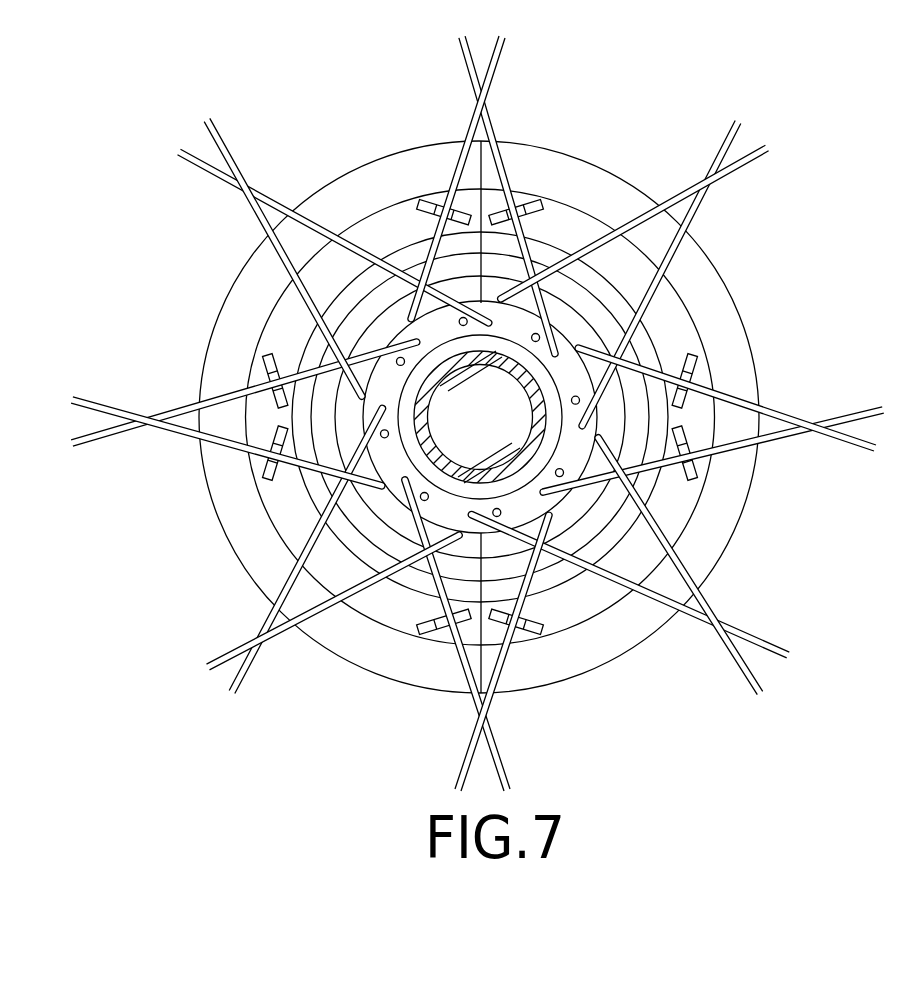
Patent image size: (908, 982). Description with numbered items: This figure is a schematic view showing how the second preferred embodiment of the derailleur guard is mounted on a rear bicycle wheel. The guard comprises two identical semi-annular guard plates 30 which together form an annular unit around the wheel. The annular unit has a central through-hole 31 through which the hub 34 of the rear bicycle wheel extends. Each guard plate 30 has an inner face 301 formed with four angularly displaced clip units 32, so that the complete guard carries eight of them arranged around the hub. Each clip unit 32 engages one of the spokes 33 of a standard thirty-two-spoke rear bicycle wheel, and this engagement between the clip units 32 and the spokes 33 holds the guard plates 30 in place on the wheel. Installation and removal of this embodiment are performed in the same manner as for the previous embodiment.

The semi-annular guard plate 30 is at (556, 141).
The inner face 301 is at (586, 660).
The central through-hole 31 is at (580, 333).
The clip unit 32 is at (697, 496).
The spoke 33 is at (707, 610).
The hub 34 is at (640, 495).